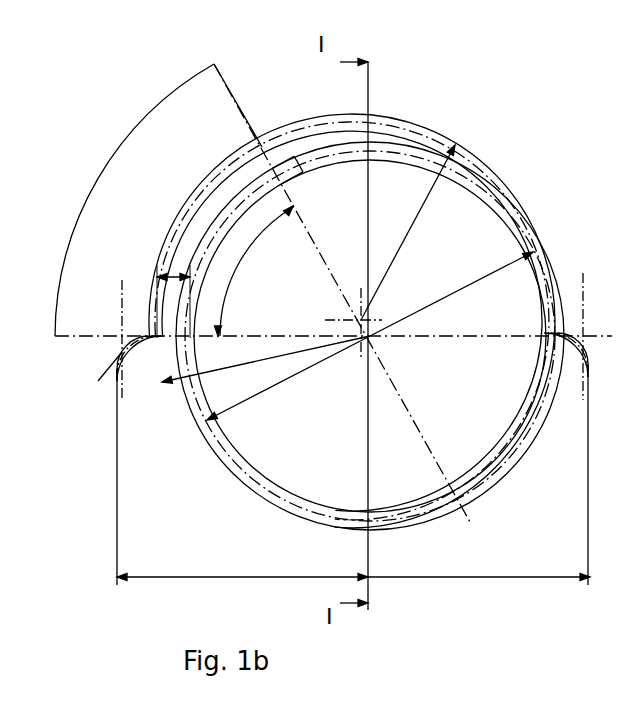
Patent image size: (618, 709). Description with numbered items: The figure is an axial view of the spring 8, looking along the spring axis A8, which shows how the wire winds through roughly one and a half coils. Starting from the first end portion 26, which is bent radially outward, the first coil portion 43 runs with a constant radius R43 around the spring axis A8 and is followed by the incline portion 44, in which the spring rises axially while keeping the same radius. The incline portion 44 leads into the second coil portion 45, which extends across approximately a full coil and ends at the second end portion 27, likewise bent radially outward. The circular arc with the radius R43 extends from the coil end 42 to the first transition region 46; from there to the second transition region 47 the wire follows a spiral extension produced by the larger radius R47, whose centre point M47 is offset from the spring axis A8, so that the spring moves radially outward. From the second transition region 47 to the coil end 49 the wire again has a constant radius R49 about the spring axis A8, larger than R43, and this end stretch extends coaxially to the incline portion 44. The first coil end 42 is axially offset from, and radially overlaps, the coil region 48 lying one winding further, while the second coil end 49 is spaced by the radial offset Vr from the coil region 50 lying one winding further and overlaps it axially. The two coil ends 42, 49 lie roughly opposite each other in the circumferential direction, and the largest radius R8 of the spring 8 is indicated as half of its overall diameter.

The spring 8 is at (496, 32).
The second transition region 47 is at (263, 147).
The first coil portion 43 is at (496, 196).
The incline portion 44 is at (222, 218).
The second coil end 49 is at (157, 338).
The coil region 48 is at (568, 352).
The first coil end 42 is at (550, 332).
The coil region 50 is at (193, 338).
The second end portion 27 is at (132, 372).
The first end portion 26 is at (575, 373).
The first transition region 46 is at (458, 492).
The second coil portion 45 is at (285, 506).
The radius R47 is at (414, 232).
The radius R43 is at (370, 340).
The radius R49 is at (266, 367).
The largest radius R8 is at (353, 566).
The centre point M47 is at (362, 322).
The spring axis A8 is at (372, 338).
The radial offset Vr is at (176, 270).